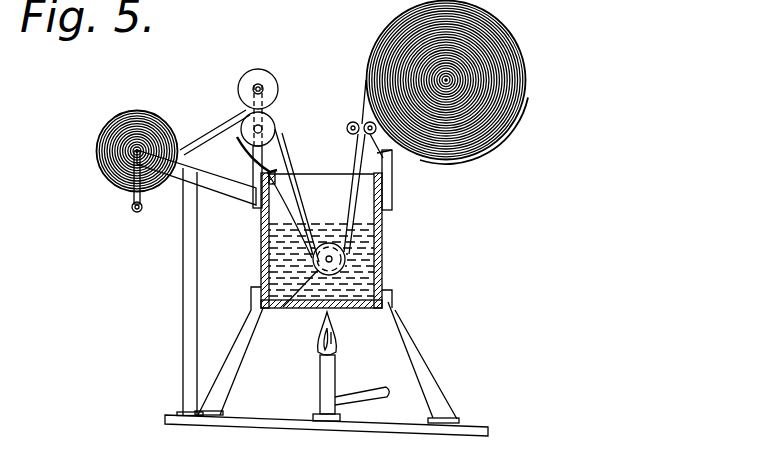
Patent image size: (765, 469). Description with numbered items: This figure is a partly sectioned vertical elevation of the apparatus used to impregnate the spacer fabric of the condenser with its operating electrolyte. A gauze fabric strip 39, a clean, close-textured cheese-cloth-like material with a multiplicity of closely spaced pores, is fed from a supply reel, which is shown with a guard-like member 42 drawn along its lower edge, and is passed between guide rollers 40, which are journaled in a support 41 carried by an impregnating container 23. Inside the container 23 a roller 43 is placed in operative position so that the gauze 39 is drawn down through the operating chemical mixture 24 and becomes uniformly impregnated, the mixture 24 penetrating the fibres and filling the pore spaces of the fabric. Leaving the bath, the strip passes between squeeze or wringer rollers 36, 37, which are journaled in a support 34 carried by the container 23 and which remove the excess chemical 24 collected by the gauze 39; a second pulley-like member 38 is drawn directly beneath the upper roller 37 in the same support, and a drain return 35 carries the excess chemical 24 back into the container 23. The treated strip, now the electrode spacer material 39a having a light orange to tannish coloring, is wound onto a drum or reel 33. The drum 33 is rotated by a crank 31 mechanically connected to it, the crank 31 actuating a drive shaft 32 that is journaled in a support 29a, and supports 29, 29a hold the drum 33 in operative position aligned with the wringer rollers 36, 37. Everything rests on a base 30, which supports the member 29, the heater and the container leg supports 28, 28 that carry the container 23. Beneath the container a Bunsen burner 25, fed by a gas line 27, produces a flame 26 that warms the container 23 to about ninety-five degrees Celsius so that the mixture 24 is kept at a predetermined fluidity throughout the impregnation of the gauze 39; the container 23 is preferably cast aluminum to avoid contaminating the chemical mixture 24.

The impregnating container 23 is at (380, 265).
The operating chemical mixture 24 is at (358, 282).
The Bunsen burner 25 is at (323, 388).
The flame 26 is at (333, 340).
The gas line 27 is at (375, 400).
The container leg supports 28 is at (232, 370).
The support 29 is at (183, 292).
The support 29a is at (171, 180).
The base 30 is at (256, 428).
The crank 31 is at (132, 204).
The drive shaft 32 is at (138, 152).
The drum or reel 33 is at (112, 137).
The support 34 is at (256, 176).
The drain return 35 is at (255, 133).
The squeeze or wringer roller 36 is at (277, 147).
The squeeze or wringer roller 37 is at (270, 88).
The lower pulley 38 is at (277, 118).
The gauze fabric strip 39 is at (510, 110).
The electrode spacer material 39a is at (194, 153).
The guide rollers 40 is at (353, 122).
The support 41 is at (392, 198).
The guard 42 is at (483, 153).
The roller 43 is at (272, 308).